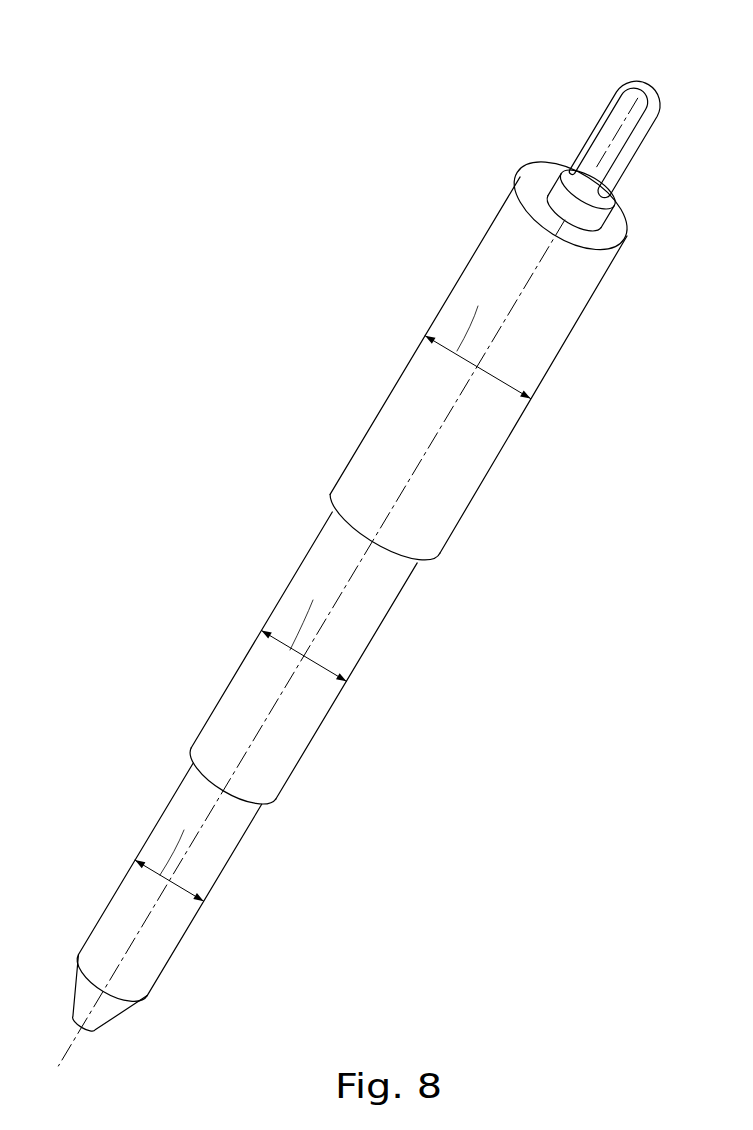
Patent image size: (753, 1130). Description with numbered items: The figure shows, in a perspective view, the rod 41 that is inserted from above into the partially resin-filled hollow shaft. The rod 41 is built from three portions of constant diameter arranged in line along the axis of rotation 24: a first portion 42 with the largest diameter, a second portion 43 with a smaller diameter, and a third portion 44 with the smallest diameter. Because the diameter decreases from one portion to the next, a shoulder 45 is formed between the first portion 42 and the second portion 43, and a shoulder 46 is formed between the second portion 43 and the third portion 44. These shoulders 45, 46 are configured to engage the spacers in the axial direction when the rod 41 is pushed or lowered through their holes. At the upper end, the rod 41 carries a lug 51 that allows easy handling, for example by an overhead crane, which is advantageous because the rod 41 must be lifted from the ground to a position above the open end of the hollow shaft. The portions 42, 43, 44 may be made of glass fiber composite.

The rod 41 is at (323, 201).
The first portion 42 is at (404, 363).
The second portion 43 is at (240, 661).
The third portion 44 is at (114, 891).
The shoulder 45 is at (334, 511).
The shoulder 46 is at (190, 766).
The axis of rotation 24 is at (324, 628).
The lug 51 is at (655, 80).